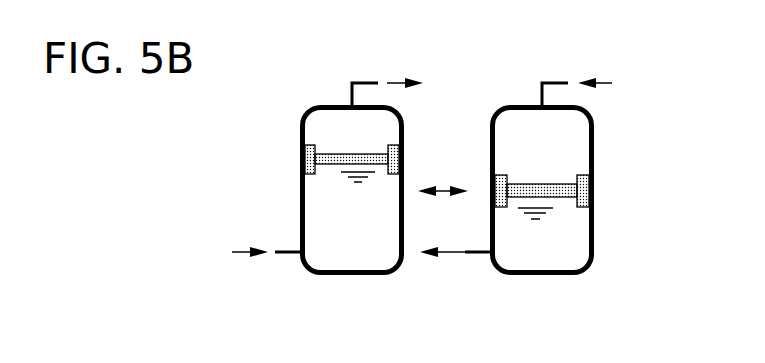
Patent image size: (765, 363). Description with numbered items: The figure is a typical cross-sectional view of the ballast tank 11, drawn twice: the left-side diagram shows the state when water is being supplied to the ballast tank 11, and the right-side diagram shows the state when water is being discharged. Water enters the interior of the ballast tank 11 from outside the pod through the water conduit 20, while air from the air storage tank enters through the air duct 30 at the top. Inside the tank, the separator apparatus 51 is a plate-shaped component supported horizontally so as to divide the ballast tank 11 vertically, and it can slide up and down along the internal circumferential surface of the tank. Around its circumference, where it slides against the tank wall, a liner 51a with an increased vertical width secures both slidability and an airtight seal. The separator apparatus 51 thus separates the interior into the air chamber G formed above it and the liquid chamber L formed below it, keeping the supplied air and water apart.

The ballast tank 11 is at (300, 212).
The water conduit 20 is at (288, 255).
The air duct 30 is at (366, 82).
The separator apparatus 51 is at (332, 154).
The liner 51a is at (310, 175).
The air chamber G is at (335, 127).
The liquid chamber L is at (352, 252).